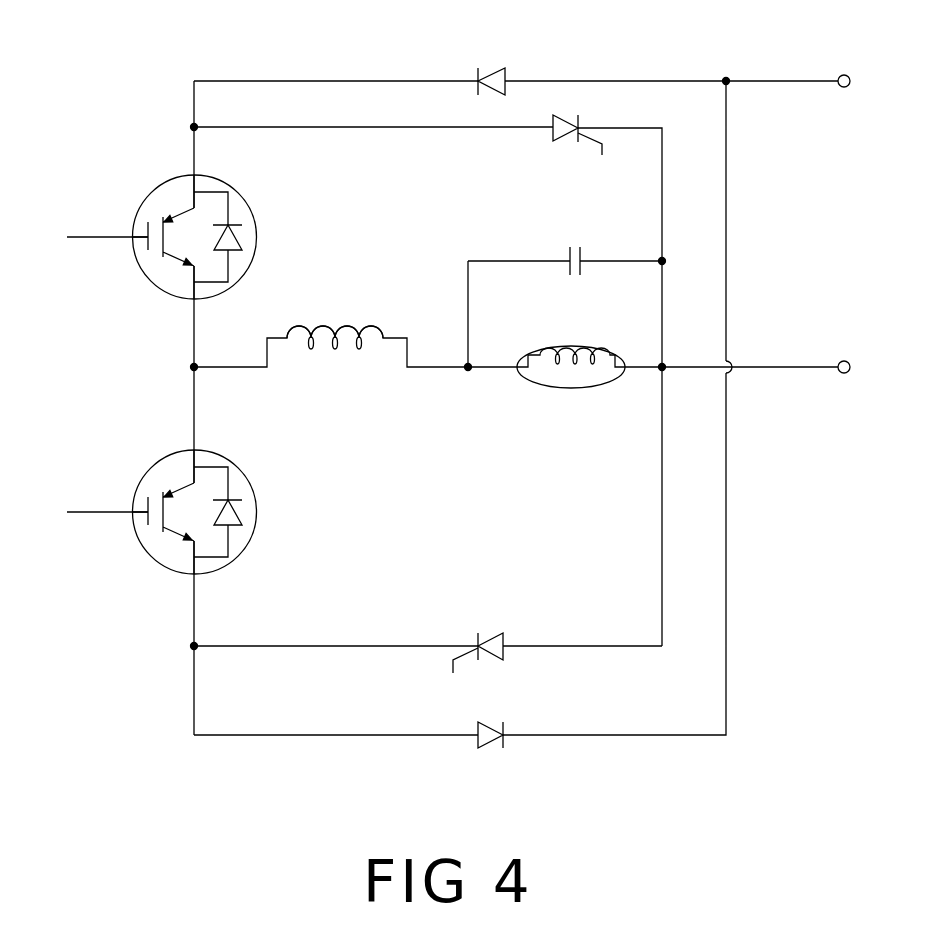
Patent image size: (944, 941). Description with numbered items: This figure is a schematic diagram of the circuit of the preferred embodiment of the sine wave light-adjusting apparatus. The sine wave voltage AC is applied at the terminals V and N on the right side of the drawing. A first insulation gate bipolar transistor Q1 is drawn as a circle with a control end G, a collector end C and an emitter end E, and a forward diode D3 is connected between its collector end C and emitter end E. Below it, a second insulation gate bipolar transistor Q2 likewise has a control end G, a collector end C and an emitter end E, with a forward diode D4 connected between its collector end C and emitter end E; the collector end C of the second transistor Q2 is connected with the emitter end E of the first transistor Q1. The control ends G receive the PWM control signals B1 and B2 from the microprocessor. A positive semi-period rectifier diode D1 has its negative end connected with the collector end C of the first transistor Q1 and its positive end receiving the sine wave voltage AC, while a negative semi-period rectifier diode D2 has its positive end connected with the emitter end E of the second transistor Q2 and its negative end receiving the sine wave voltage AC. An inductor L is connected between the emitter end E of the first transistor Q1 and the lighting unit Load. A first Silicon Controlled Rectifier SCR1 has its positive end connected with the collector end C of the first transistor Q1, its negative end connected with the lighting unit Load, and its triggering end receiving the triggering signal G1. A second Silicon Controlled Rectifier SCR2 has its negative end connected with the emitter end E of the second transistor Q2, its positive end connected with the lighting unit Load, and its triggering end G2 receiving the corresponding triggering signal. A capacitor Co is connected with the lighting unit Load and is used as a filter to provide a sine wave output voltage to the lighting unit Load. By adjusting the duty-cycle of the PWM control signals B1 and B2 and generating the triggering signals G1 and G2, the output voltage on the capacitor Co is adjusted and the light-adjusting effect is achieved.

The positive semi-period rectifier diode D1 is at (497, 65).
The negative semi-period rectifier diode D2 is at (491, 759).
The forward diode D3 is at (243, 237).
The forward diode D4 is at (243, 512).
The first Silicon Controlled Rectifier SCR1 is at (604, 120).
The second Silicon Controlled Rectifier SCR2 is at (496, 631).
The triggering signal G1 is at (601, 164).
The triggering end G2 is at (457, 682).
The first insulation gate bipolar transistor Q1 is at (160, 268).
The second insulation gate bipolar transistor Q2 is at (158, 543).
The PWM control signal B1 is at (89, 239).
The PWM control signal B2 is at (89, 516).
The inductor L is at (335, 364).
The capacitor Co is at (565, 246).
The lighting unit Load is at (573, 388).
The AC voltage terminal V is at (859, 82).
The neutral terminal N is at (859, 370).
The sine wave voltage AC is at (858, 224).
The collector end C is at (183, 312).
The emitter end E is at (206, 440).
The control end G is at (131, 358).